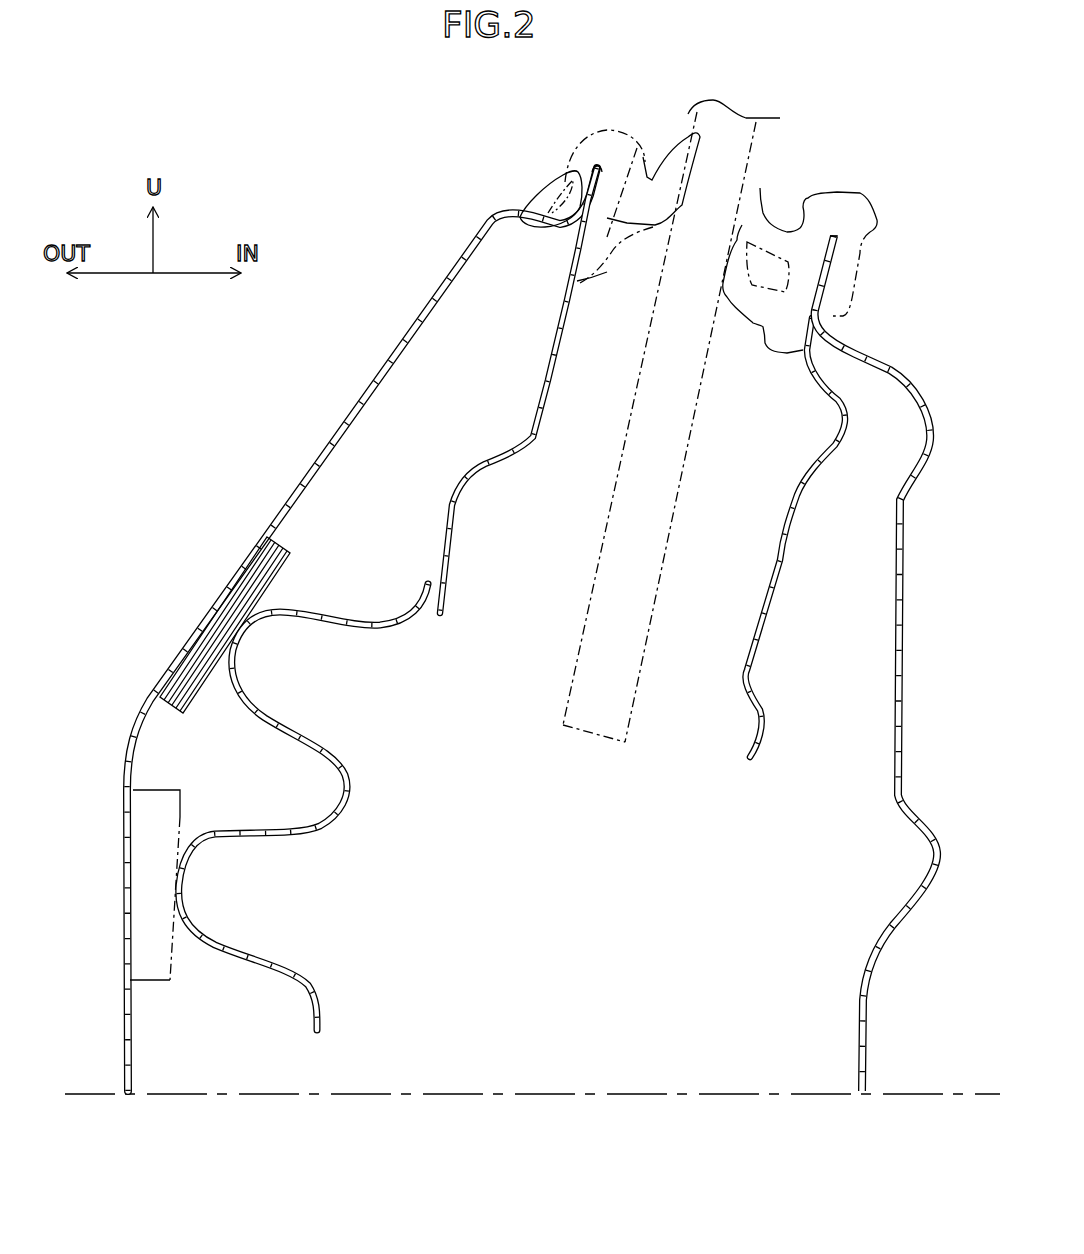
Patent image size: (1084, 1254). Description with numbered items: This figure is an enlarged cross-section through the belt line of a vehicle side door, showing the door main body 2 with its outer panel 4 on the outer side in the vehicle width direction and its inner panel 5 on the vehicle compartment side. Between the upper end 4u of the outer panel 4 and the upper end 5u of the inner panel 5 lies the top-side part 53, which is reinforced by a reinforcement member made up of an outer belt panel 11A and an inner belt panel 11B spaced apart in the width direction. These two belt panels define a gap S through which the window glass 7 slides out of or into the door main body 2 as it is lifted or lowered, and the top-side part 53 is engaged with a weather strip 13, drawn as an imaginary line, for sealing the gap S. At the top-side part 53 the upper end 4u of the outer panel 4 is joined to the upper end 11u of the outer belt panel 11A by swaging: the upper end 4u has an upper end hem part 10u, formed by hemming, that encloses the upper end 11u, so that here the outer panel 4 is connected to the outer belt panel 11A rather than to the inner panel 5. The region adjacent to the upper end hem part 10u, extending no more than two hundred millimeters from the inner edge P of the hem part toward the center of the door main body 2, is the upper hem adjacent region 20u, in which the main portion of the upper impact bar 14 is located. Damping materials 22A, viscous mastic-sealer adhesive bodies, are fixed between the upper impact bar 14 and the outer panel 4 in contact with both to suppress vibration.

The door main body 2 is at (859, 134).
The outer panel 4 is at (320, 442).
The inner panel 5 is at (906, 639).
The upper end of the outer panel 4u is at (576, 170).
The upper end of the inner panel 5u is at (841, 268).
The upper hem adjacent region 20u is at (489, 218).
The upper end hem part 10u is at (621, 150).
The upper end of the outer belt panel 11u is at (605, 173).
The outer belt panel 11A is at (497, 471).
The inner belt panel 11B is at (776, 599).
The weather strip 13 is at (591, 133).
The upper impact bar 14 is at (345, 819).
The damping material 22A is at (280, 578).
The top-side part 53 is at (872, 300).
The window glass 7 is at (638, 687).
The inner edge of the hem part P is at (615, 215).
The gap S is at (722, 518).